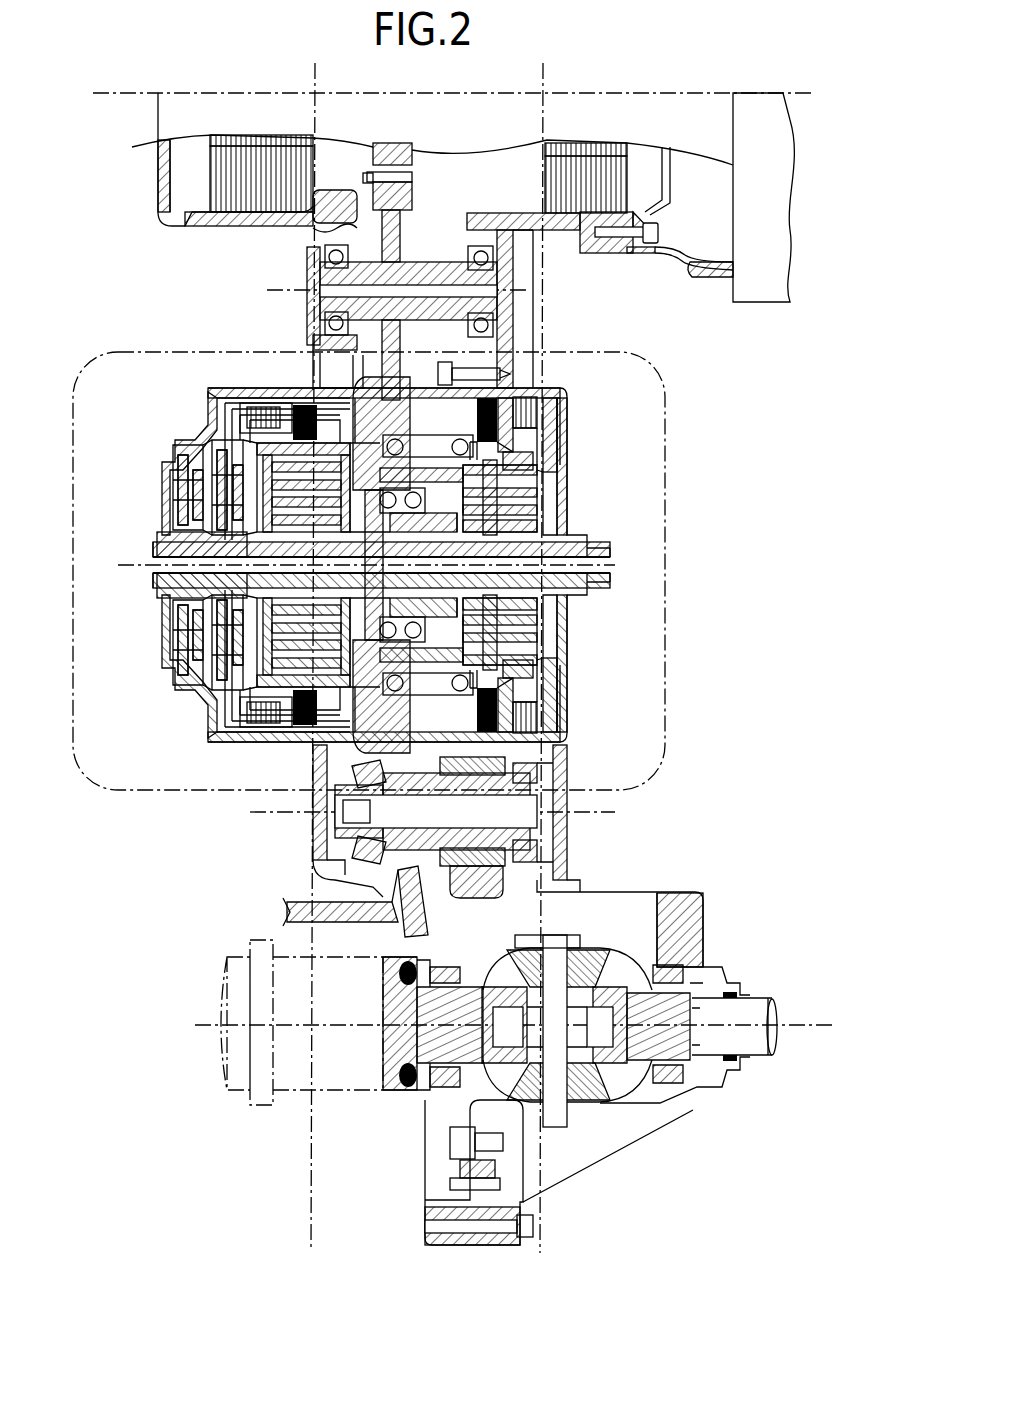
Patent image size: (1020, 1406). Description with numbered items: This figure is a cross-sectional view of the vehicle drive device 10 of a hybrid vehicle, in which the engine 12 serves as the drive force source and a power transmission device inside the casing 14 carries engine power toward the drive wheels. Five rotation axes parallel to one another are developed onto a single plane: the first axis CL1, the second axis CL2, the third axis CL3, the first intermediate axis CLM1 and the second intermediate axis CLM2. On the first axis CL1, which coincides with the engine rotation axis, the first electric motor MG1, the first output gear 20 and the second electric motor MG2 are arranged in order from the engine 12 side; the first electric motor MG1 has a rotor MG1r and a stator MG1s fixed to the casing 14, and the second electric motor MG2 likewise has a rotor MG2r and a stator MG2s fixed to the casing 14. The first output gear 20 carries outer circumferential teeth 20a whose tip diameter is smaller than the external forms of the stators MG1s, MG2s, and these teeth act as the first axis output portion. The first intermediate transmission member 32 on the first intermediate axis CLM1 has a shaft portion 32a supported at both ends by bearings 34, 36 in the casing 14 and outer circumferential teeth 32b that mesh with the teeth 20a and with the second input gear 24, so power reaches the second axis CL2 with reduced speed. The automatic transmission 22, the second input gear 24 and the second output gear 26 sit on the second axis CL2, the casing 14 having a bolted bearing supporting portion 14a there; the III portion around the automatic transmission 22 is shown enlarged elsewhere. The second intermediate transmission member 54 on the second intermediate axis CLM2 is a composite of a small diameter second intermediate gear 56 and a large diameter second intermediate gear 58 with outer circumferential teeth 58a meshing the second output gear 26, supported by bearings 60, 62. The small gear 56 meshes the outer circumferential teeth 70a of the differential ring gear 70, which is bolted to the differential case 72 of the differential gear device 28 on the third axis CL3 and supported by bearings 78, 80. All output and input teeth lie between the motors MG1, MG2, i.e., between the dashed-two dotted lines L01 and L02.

The vehicle drive device 10 is at (777, 58).
The engine 12 is at (757, 302).
The casing 14 is at (307, 250).
The bearing supporting portion 14a is at (447, 410).
The first output gear 20 is at (387, 270).
The outer circumferential teeth 20a is at (412, 177).
The automatic transmission 22 is at (600, 406).
The second input gear 24 is at (362, 390).
The second output gear 26 is at (402, 443).
The differential gear device 28 is at (499, 1028).
The first intermediate transmission member 32 is at (408, 258).
The shaft portion 32a is at (418, 268).
The outer circumferential teeth 32b is at (363, 178).
The bearing 34 is at (345, 258).
The bearing 36 is at (472, 258).
The second intermediate transmission member 54 is at (398, 908).
The small diameter second intermediate gear 56 is at (555, 826).
The large diameter second intermediate gear 58 is at (436, 842).
The outer circumferential teeth 58a is at (405, 937).
The bearing 60 is at (550, 790).
The bearing 62 is at (368, 768).
The differential ring gear 70 is at (445, 1167).
The outer circumferential teeth 70a is at (450, 1188).
The differential case 72 is at (605, 960).
The bearing 78 is at (673, 1075).
The bearing 80 is at (418, 1098).
The first electric motor MG1 is at (583, 159).
The rotor MG1r is at (595, 142).
The stator MG1s is at (545, 194).
The second electric motor MG2 is at (240, 177).
The rotor MG2r is at (249, 135).
The stator MG2s is at (244, 207).
The first axis CL1 is at (114, 92).
The second axis CL2 is at (131, 563).
The third axis CL3 is at (204, 1024).
The first intermediate axis CLM1 is at (282, 292).
The second intermediate axis CLM2 is at (270, 813).
The dashed-two dotted line L01 is at (546, 78).
The dashed-two dotted line L02 is at (318, 78).
The III portion III is at (126, 350).